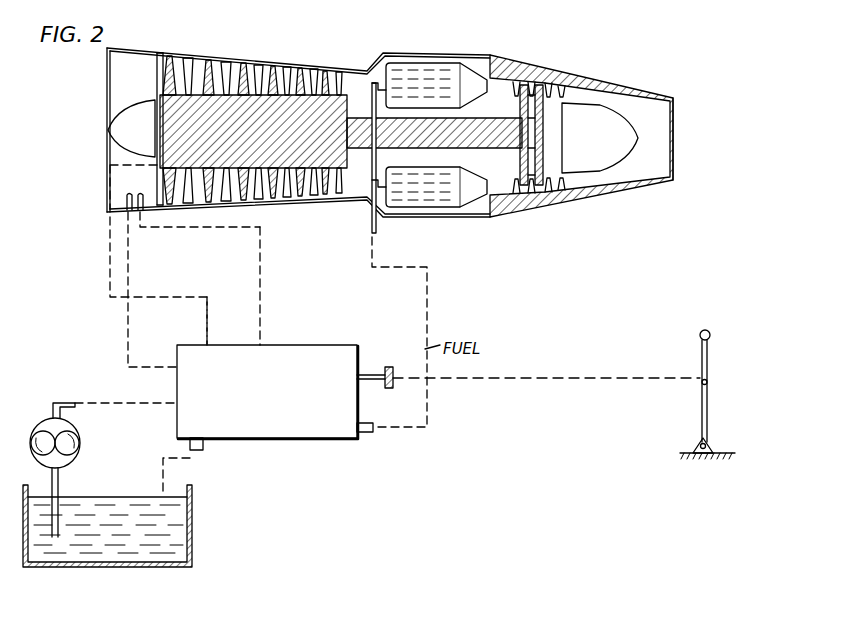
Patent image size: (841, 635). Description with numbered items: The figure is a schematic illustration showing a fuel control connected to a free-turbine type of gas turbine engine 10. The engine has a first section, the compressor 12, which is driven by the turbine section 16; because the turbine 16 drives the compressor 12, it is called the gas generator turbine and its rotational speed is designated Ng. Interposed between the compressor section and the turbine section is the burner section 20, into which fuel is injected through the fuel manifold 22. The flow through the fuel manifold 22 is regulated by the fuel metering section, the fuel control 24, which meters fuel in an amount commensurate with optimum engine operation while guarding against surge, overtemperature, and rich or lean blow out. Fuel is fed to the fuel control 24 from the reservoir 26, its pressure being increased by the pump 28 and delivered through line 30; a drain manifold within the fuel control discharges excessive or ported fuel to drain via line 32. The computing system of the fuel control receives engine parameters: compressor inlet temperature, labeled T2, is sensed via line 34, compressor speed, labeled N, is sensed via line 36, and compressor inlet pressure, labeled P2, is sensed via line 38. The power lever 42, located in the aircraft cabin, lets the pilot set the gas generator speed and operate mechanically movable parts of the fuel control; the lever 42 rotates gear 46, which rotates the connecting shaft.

The gas turbine engine 10 is at (400, 42).
The compressor section 12 is at (248, 60).
The turbine section 16 is at (540, 76).
The burner section 20 is at (452, 62).
The fuel manifold 22 is at (378, 234).
The fuel control 24 is at (273, 441).
The reservoir 26 is at (93, 567).
The pump 28 is at (82, 455).
The fuel supply line 30 is at (97, 403).
The drain line 32 is at (203, 452).
The compressor inlet temperature sensing line 34 is at (131, 249).
The compressor speed sensing line 36 is at (173, 297).
The compressor inlet pressure sensing line 38 is at (263, 261).
The power lever 42 is at (708, 395).
The gear 46 is at (390, 365).
The speed signal N is at (108, 262).
The inlet temperature signal T2 is at (128, 343).
The compressor discharge pressure signal P2 is at (263, 302).